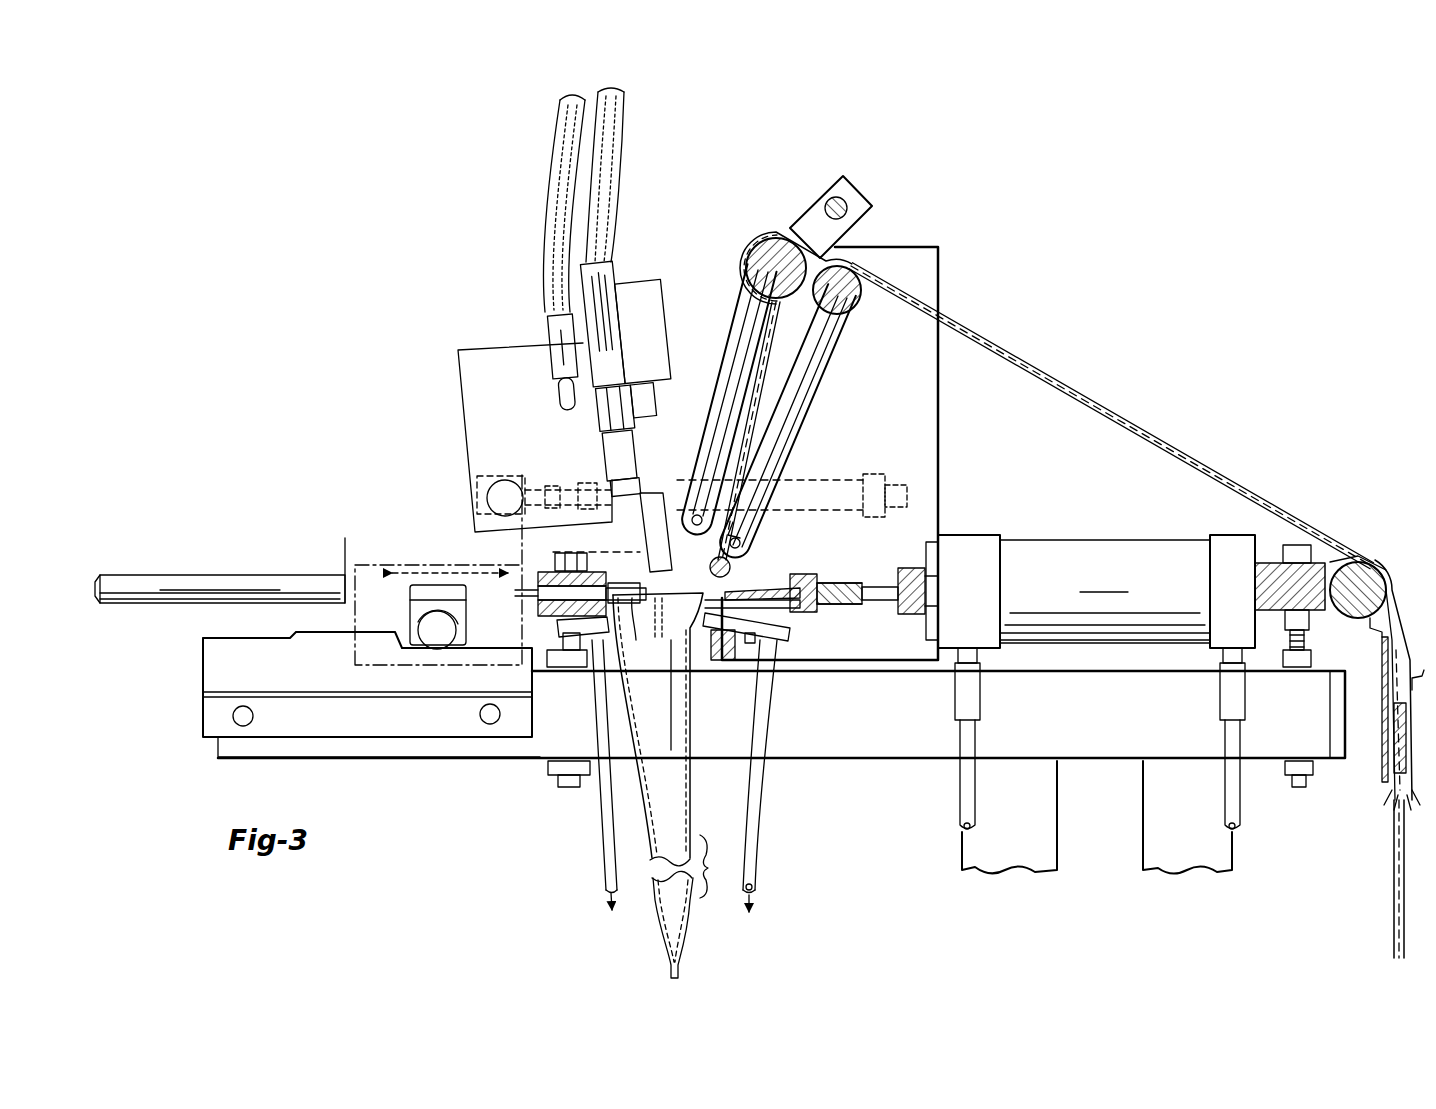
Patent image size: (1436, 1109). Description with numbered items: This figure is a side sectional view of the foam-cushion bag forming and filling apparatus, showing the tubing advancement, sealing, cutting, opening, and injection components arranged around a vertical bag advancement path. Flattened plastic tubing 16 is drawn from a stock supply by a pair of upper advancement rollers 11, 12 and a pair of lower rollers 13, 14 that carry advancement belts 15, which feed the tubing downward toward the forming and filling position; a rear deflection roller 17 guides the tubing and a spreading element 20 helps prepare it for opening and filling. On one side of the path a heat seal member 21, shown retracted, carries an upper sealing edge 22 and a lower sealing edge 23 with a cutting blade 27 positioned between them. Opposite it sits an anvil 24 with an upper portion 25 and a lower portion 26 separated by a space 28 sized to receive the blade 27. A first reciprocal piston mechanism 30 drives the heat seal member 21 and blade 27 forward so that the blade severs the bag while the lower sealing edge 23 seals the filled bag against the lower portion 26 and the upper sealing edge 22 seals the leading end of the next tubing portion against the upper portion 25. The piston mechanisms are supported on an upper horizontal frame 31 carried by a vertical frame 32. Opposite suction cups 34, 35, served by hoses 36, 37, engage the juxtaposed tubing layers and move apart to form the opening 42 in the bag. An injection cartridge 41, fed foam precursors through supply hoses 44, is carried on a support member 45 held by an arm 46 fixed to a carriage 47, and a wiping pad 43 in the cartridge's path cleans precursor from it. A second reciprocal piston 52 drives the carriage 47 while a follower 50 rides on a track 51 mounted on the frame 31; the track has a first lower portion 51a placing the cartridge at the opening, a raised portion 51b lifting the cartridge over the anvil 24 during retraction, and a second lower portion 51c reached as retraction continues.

The upper advancement roller 11 is at (772, 248).
The upper advancement roller 12 is at (840, 282).
The lower roller 13 is at (716, 560).
The lower roller 14 is at (742, 540).
The advancement belts 15 is at (730, 340).
The flattened plastic tubing 16 is at (1164, 422).
The rear deflection roller 17 is at (1364, 568).
The spreading element 20 is at (1385, 768).
The heat seal member 21 is at (848, 612).
The upper sealing edge 22 is at (792, 578).
The lower sealing edge 23 is at (792, 612).
The anvil 24 is at (538, 608).
The upper portion of anvil 25 is at (640, 582).
The lower portion of anvil 26 is at (628, 690).
The cutting blade 27 is at (735, 590).
The space 28 is at (538, 590).
The first reciprocal piston mechanism 30 is at (1128, 555).
The upper horizontal frame 31 is at (1106, 722).
The vertical frame 32 is at (958, 855).
The suction cup 34 is at (600, 680).
The suction cup 35 is at (742, 662).
The hose 36 is at (600, 820).
The hose 37 is at (755, 820).
The injection cartridge 41 is at (665, 492).
The opening 42 is at (722, 606).
The wiping pad 43 is at (385, 560).
The supply hoses 44 is at (628, 108).
The support member 45 is at (524, 400).
The arm 46 is at (502, 500).
The carriage 47 is at (470, 482).
The follower 50 is at (424, 624).
The track 51 is at (360, 710).
The first lower portion 51a is at (460, 648).
The raised portion 51b is at (308, 632).
The second lower portion 51c is at (212, 638).
The second reciprocal piston 52 is at (808, 490).